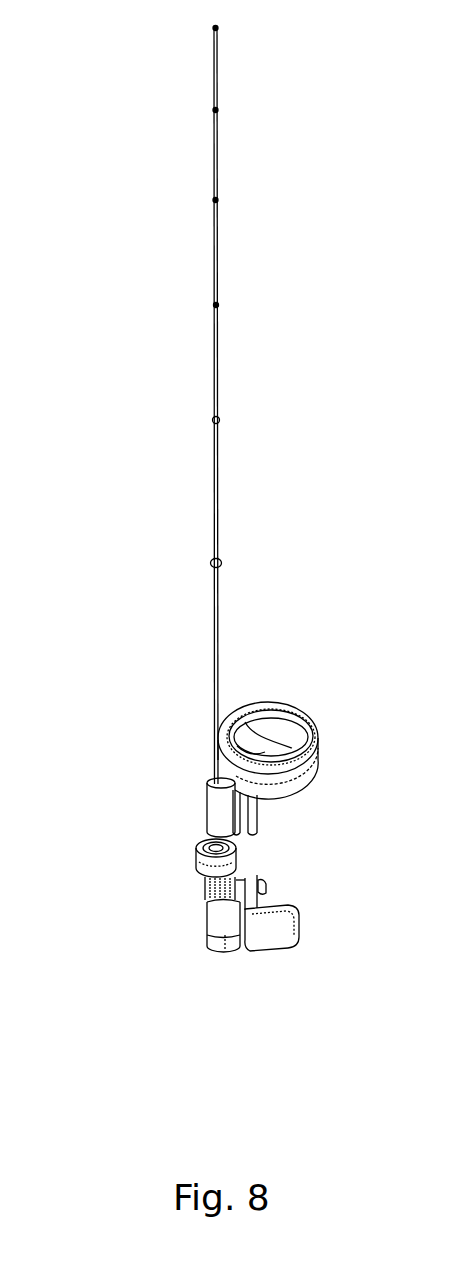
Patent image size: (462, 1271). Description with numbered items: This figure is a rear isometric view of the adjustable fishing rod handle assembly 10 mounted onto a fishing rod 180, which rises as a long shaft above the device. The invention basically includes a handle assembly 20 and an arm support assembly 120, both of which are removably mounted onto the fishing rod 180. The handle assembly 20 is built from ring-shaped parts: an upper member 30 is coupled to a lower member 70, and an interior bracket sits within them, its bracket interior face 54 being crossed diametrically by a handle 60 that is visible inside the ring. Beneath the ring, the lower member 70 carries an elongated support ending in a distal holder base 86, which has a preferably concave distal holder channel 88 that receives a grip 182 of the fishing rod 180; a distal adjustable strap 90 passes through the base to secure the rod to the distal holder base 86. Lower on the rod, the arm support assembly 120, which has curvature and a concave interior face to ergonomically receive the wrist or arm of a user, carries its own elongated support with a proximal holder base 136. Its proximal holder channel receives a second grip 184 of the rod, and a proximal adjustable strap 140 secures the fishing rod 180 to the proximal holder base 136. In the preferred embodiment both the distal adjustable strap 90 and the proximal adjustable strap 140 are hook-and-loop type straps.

The fishing rod 180 is at (266, 341).
The adjustable fishing rod handle assembly 10 is at (305, 530).
The upper member 30 is at (262, 665).
The lower member 70 is at (328, 803).
The distal holder base 86 is at (315, 766).
The handle assembly 20 is at (310, 667).
The bracket interior face 54 is at (283, 730).
The handle 60 is at (261, 740).
The distal holder channel 88 is at (217, 781).
The distal adjustable strap 90 is at (205, 800).
The grip 182 is at (207, 830).
The proximal adjustable strap 140 is at (215, 920).
The grip 184 is at (210, 945).
The proximal holder base 136 is at (228, 946).
The arm support assembly 120 is at (315, 939).